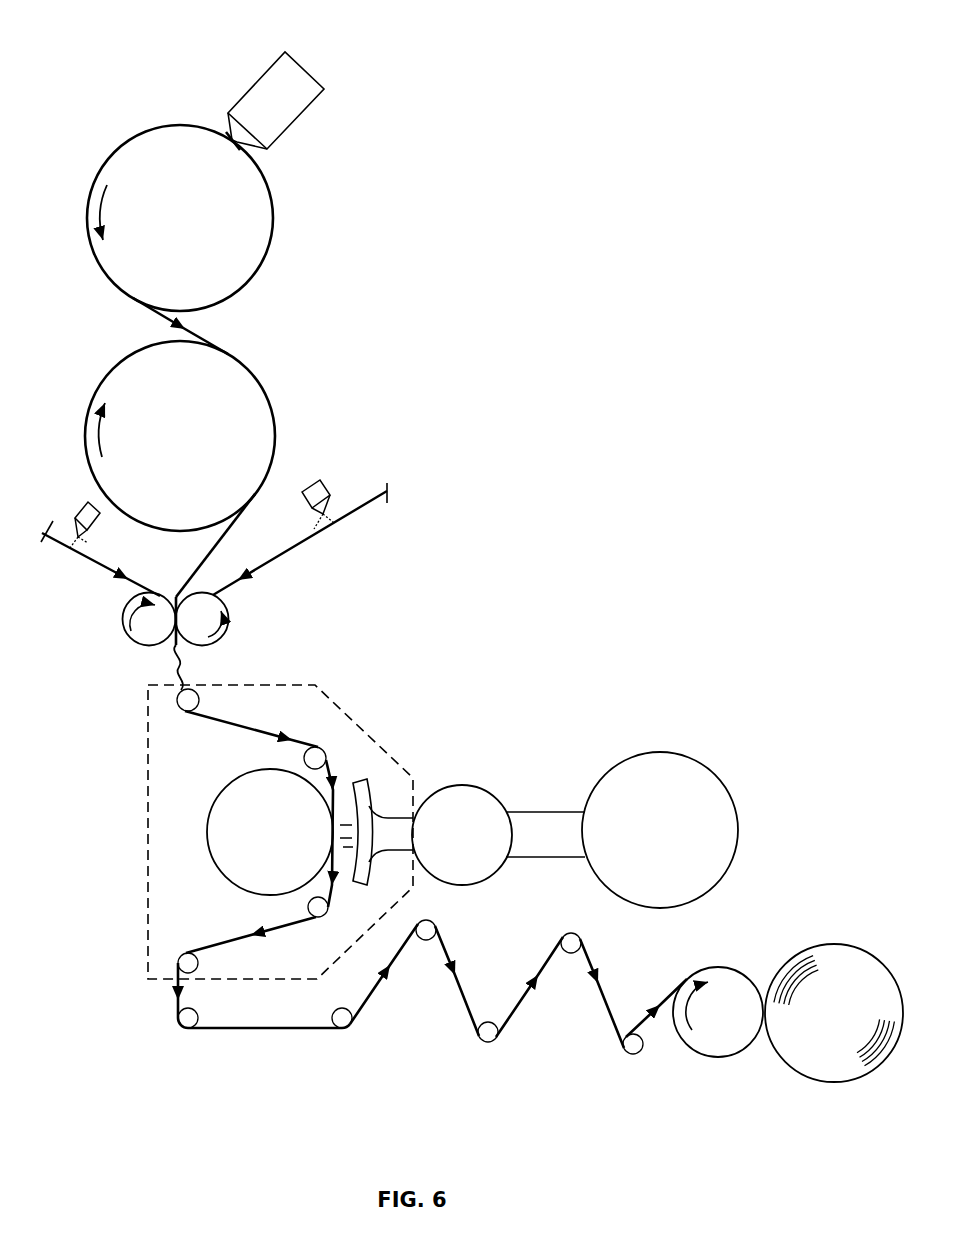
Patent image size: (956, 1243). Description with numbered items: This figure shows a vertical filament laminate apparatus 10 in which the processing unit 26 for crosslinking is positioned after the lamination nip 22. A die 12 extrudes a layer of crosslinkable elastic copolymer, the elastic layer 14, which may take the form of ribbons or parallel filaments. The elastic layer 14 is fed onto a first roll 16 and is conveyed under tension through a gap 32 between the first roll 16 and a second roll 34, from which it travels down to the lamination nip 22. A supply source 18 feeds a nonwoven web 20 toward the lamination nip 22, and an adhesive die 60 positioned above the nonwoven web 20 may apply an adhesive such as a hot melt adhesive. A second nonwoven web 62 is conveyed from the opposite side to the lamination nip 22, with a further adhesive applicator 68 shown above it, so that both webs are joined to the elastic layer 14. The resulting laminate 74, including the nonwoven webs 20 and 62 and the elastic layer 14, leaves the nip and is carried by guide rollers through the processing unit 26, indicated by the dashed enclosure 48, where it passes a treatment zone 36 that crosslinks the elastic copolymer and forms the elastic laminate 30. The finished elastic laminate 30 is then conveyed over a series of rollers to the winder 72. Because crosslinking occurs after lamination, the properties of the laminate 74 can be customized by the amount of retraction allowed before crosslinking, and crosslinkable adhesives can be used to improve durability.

The apparatus 10 is at (478, 498).
The die 12 is at (257, 83).
The elastic layer 14 is at (233, 143).
The first roll 16 is at (275, 208).
The supply source 18 is at (354, 510).
The nonwoven web 20 is at (266, 566).
The lamination nip 22 is at (238, 632).
The processing unit 26 is at (550, 764).
The elastic laminate 30 is at (178, 981).
The gap 32 is at (228, 322).
The second roll 34 is at (87, 460).
The treatment zone 36 is at (345, 826).
The enclosure 48 is at (352, 718).
The adhesive die 60 is at (326, 492).
The second nonwoven web 62 is at (98, 557).
The second spray nozzle 68 is at (75, 512).
The winder 72 is at (752, 948).
The laminate 74 is at (178, 655).